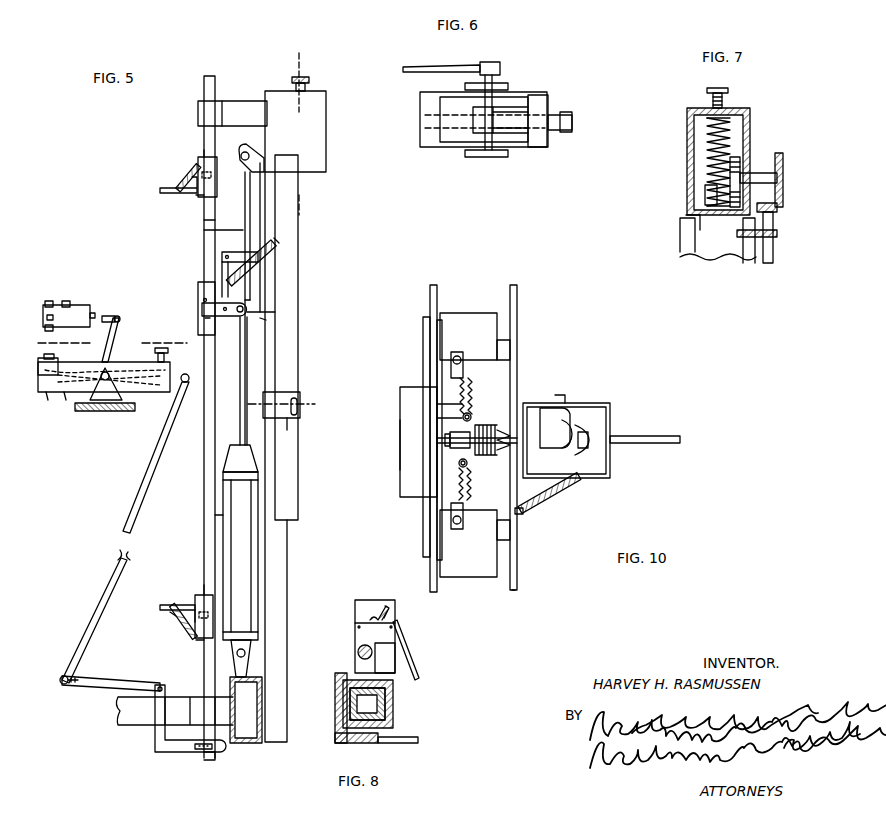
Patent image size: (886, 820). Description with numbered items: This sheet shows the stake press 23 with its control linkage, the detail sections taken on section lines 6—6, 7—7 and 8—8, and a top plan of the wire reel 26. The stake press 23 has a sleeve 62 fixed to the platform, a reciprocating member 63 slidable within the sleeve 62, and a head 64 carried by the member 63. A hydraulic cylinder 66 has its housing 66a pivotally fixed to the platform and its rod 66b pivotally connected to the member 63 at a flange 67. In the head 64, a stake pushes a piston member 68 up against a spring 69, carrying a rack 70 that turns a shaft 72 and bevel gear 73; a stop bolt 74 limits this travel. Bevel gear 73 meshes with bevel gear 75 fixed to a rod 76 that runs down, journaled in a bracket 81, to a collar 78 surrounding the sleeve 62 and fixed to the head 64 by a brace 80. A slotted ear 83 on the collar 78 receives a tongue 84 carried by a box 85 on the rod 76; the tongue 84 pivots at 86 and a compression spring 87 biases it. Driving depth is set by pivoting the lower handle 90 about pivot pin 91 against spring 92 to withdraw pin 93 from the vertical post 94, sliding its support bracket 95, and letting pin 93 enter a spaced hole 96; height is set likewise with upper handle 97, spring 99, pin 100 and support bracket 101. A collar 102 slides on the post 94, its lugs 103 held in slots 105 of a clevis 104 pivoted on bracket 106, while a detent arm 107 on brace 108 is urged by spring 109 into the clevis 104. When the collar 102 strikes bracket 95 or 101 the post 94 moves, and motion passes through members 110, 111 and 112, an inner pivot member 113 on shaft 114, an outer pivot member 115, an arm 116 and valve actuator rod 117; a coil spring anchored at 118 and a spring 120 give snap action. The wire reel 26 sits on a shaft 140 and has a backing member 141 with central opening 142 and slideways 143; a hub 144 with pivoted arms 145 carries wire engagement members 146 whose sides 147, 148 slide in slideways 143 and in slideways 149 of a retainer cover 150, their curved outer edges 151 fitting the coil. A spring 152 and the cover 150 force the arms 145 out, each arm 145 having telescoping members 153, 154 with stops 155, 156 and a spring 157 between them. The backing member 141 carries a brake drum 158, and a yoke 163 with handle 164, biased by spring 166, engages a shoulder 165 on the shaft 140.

In FIG. 5, the section line 6— 6 is at (32, 358).
In FIG. 5, the section line 7— 7 is at (280, 58).
In FIG. 5, the section line 8— 8 is at (253, 422).
In FIG. 5, the stake press 23 is at (318, 181).
In FIG. 10, the wire reel 26 is at (580, 353).
In FIG. 5, the sleeve 62 is at (273, 563).
In FIG. 8, the sleeve 62 is at (378, 705).
In FIG. 5, the reciprocating member 63 is at (275, 292).
In FIG. 8, the reciprocating member 63 is at (385, 697).
In FIG. 5, the head 64 is at (312, 116).
In FIG. 7, the head 64 is at (687, 128).
In FIG. 5, the hydraulic cylinder 66 is at (209, 496).
In FIG. 5, the housing 66a is at (214, 519).
In FIG. 5, the rod 66b is at (205, 232).
In FIG. 5, the flange 67 is at (262, 154).
In FIG. 7, the piston member 68 is at (687, 225).
In FIG. 7, the spring 69 is at (707, 159).
In FIG. 7, the rack 70 is at (739, 154).
In FIG. 7, the shaft 72 is at (770, 169).
In FIG. 7, the bevel gear 73 is at (777, 177).
In FIG. 7, the stop bolt 74 is at (725, 102).
In FIG. 7, the bevel gear 75 is at (777, 207).
In FIG. 7, the rod 76 is at (773, 255).
In FIG. 5, the collar 78 is at (287, 388).
In FIG. 8, the collar 78 is at (334, 718).
In FIG. 5, the brace 80 is at (279, 313).
In FIG. 7, the bracket 81 is at (777, 233).
In FIG. 5, the slotted ear 83 is at (288, 419).
In FIG. 8, the slotted ear 83 is at (413, 735).
In FIG. 8, the tongue 84 is at (416, 674).
In FIG. 8, the box 85 is at (390, 606).
In FIG. 8, the pivot connection 86 is at (395, 627).
In FIG. 8, the compression spring 87 is at (355, 618).
In FIG. 5, the lower handle 90 is at (190, 600).
In FIG. 5, the pivot pin 91 is at (204, 582).
In FIG. 5, the spring 92 is at (173, 618).
In FIG. 5, the pin 93 is at (171, 610).
In FIG. 5, the vertical post 94 is at (222, 484).
In FIG. 5, the support bracket 95 is at (190, 635).
In FIG. 5, the spaced holes 96 is at (196, 197).
In FIG. 5, the upper handle 97 is at (164, 189).
In FIG. 5, the spring 99 is at (178, 179).
In FIG. 5, the pin 100 is at (202, 160).
In FIG. 5, the support bracket 101 is at (204, 152).
In FIG. 5, the collar 102 is at (198, 283).
In FIG. 5, the lugs 103 is at (202, 306).
In FIG. 5, the slotted clevis 104 is at (250, 332).
In FIG. 5, the slot 105 is at (199, 295).
In FIG. 5, the bracket 106 is at (275, 324).
In FIG. 5, the detent arm 107 is at (222, 259).
In FIG. 5, the brace 108 is at (199, 325).
In FIG. 5, the spring 109 is at (277, 272).
In FIG. 5, the linkage rod 110 is at (164, 748).
In FIG. 5, the crank arm 111 is at (138, 683).
In FIG. 5, the linkage arm 112 is at (128, 532).
In FIG. 5, the inner pivot member 113 is at (160, 399).
In FIG. 6, the inner pivot member 113 is at (512, 101).
In FIG. 6, the shaft 114 is at (454, 110).
In FIG. 5, the outer pivot member 115 is at (79, 407).
In FIG. 6, the outer pivot member 115 is at (548, 104).
In FIG. 5, the arm 116 is at (117, 320).
In FIG. 6, the arm 116 is at (499, 65).
In FIG. 6, the valve actuator rod 117 is at (416, 68).
In FIG. 5, the spring anchor 118 is at (48, 392).
In FIG. 5, the spring 120 is at (64, 394).
In FIG. 6, the spring 120 is at (462, 123).
In FIG. 10, the shaft 140 is at (388, 453).
In FIG. 10, the backing member 141 is at (432, 291).
In FIG. 10, the central opening 142 is at (398, 460).
In FIG. 10, the slideways 143 is at (437, 338).
In FIG. 10, the central hub 144 is at (448, 412).
In FIG. 10, the arms 145 is at (470, 396).
In FIG. 10, the wire engagement members 146 is at (473, 438).
In FIG. 10, the side 147 is at (426, 312).
In FIG. 10, the side 148 is at (500, 318).
In FIG. 10, the slideways 149 is at (503, 337).
In FIG. 10, the retainer cover 150 is at (518, 588).
In FIG. 10, the outer edge 151 is at (486, 290).
In FIG. 10, the spring 152 is at (478, 456).
In FIG. 10, the telescoping member 153 is at (466, 360).
In FIG. 10, the telescoping member 154 is at (533, 404).
In FIG. 10, the stop 155 is at (468, 380).
In FIG. 10, the stop 156 is at (472, 405).
In FIG. 10, the spring 157 is at (463, 492).
In FIG. 10, the brake drum 158 is at (408, 395).
In FIG. 10, the yoke 163 is at (602, 403).
In FIG. 10, the handle 164 is at (648, 432).
In FIG. 10, the shoulder 165 is at (593, 448).
In FIG. 10, the spring 166 is at (570, 491).